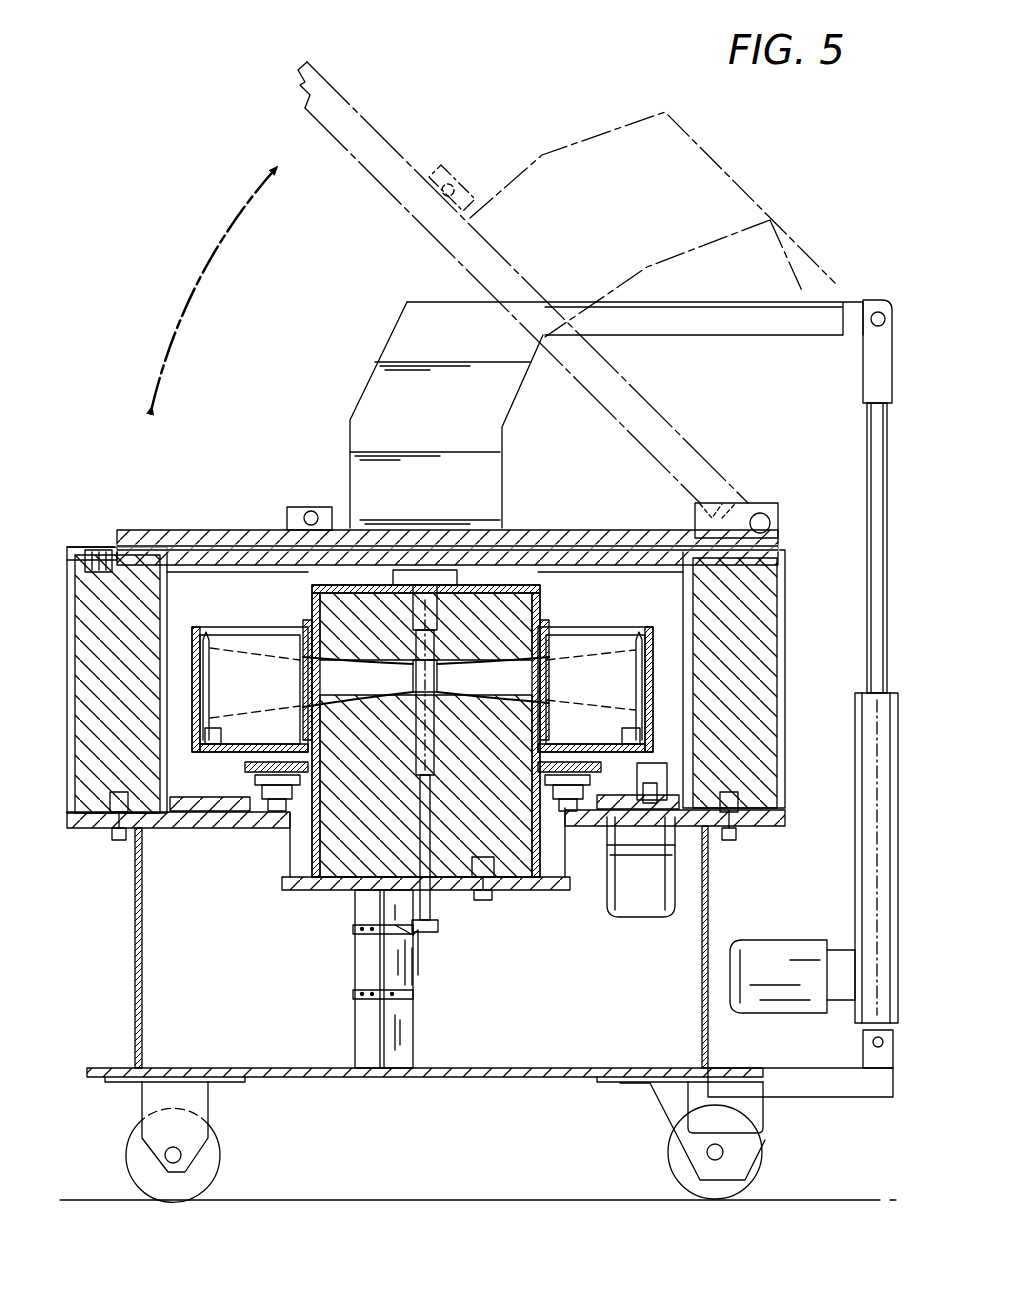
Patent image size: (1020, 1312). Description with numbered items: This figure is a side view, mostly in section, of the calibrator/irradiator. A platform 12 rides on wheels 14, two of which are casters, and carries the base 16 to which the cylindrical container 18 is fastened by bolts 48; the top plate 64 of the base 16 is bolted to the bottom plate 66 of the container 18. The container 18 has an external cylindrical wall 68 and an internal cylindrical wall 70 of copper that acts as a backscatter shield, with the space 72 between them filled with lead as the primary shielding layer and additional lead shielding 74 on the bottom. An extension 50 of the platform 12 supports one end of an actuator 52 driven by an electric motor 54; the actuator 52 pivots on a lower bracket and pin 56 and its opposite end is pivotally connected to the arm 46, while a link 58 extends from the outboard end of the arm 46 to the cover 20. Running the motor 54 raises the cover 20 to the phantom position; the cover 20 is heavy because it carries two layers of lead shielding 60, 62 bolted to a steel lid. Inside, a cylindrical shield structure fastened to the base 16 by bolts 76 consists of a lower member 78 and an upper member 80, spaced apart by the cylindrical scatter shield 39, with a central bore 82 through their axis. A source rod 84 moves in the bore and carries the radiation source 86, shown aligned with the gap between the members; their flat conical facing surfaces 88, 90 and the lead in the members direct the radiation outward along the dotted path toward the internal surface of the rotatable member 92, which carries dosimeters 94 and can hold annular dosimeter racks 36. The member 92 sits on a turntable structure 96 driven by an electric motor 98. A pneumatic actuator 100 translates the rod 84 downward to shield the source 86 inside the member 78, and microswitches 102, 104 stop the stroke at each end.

The platform 12 is at (455, 1078).
The wheels 14 is at (228, 1167).
The base 16 is at (135, 1012).
The cylindrical container 18 is at (459, 712).
The cover 20 is at (200, 530).
The dosimeter rack 36 is at (222, 733).
The cylindrical scatter shield 39 is at (548, 642).
The arm 46 is at (725, 178).
The bolts 48 is at (118, 840).
The extension 50 is at (830, 1086).
The actuator 52 is at (862, 828).
The electric motor 54 is at (777, 960).
The bracket and pin 56 is at (862, 1048).
The link 58 is at (397, 335).
The lead shielding layer 60 is at (296, 568).
The lead shielding layer 62 is at (632, 562).
The top plate 64 is at (266, 829).
The bottom plate 66 is at (192, 829).
The external cylindrical wall 68 is at (76, 546).
The internal cylindrical wall 70 is at (170, 600).
The space 72 is at (758, 578).
The additional lead shielding 74 is at (224, 832).
The bolts 76 is at (500, 898).
The lower member 78 is at (336, 860).
The upper member 80 is at (512, 600).
The central bore 82 is at (437, 898).
The source rod 84 is at (440, 928).
The source of nuclear radiation 86 is at (358, 682).
The facing surface 88 is at (536, 686).
The facing surface 90 is at (578, 672).
The rotatable member 92 is at (640, 708).
The dosimeters 94 is at (212, 670).
The turntable structure 96 is at (250, 772).
The electric motor 98 is at (630, 918).
The pneumatic actuator 100 is at (412, 1040).
The microswitch 102 is at (418, 965).
The microswitch 104 is at (418, 1000).